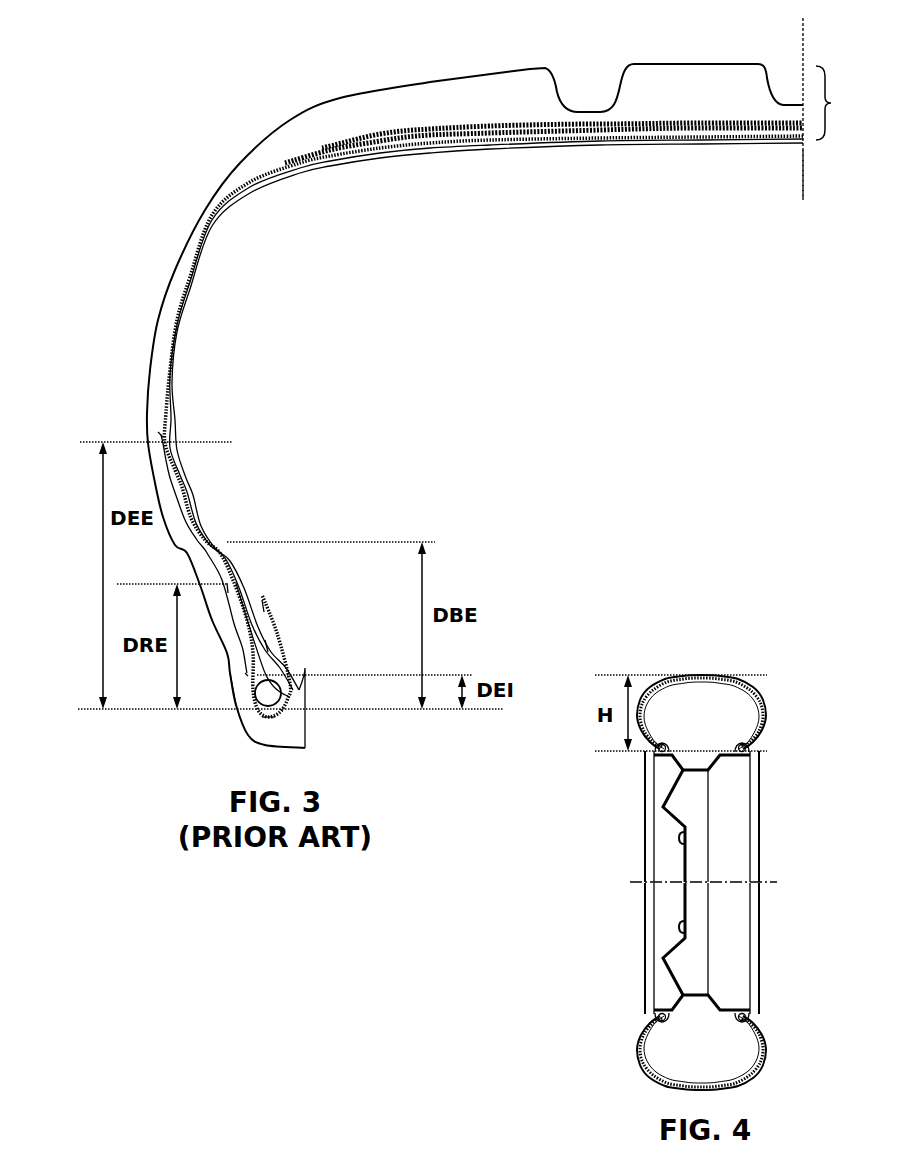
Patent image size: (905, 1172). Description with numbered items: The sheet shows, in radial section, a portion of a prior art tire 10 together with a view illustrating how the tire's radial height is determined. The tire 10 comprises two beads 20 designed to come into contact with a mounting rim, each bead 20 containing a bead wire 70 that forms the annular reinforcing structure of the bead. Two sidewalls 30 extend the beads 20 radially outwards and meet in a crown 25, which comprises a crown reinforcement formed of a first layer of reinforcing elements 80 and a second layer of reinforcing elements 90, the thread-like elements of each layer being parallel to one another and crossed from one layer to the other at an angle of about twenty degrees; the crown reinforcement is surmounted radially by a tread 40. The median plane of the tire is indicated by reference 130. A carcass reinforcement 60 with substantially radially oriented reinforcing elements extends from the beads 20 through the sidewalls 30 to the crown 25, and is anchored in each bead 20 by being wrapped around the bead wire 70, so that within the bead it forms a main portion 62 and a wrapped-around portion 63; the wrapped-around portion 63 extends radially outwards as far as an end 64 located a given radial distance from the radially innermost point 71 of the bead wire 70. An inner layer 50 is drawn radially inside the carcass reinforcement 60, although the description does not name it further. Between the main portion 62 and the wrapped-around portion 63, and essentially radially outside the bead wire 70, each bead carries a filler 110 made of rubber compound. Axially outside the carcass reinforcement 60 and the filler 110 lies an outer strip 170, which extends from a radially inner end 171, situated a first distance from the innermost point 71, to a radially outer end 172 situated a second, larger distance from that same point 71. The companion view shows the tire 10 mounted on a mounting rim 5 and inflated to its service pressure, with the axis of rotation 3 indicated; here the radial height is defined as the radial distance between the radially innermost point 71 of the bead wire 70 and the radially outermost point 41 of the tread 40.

In FIG. 3, the tire 10 is at (488, 410).
In FIG. 4, the tire 10 is at (713, 857).
In FIG. 3, the bead 20 is at (233, 667).
In FIG. 3, the crown 25 is at (845, 103).
In FIG. 3, the sidewall 30 is at (169, 320).
In FIG. 3, the tread 40 is at (514, 111).
In FIG. 4, the radially outermost point of the tread 41 is at (700, 674).
In FIG. 3, the inner liner 50 is at (179, 341).
In FIG. 3, the carcass reinforcement 60 is at (168, 392).
In FIG. 3, the main portion 62 is at (263, 607).
In FIG. 3, the wrapped-around portion 63 is at (250, 628).
In FIG. 3, the end of the wrapped-around portion 64 is at (228, 583).
In FIG. 3, the bead wire 70 is at (266, 700).
In FIG. 4, the bead wire 70 is at (665, 748).
In FIG. 3, the radially innermost point of the bead wire 71 is at (272, 718).
In FIG. 3, the first layer of reinforcing elements 80 is at (358, 141).
In FIG. 3, the second layer of reinforcing elements 90 is at (393, 134).
In FIG. 3, the filler 110 is at (267, 647).
In FIG. 3, the median plane 130 is at (807, 193).
In FIG. 3, the outer strip 170 is at (188, 518).
In FIG. 3, the radially inner end of the outer strip 171 is at (245, 675).
In FIG. 3, the radially outer end of the outer strip 172 is at (161, 435).
In FIG. 4, the mounting rim 5 is at (770, 801).
In FIG. 4, the axis of rotation 3 is at (720, 883).